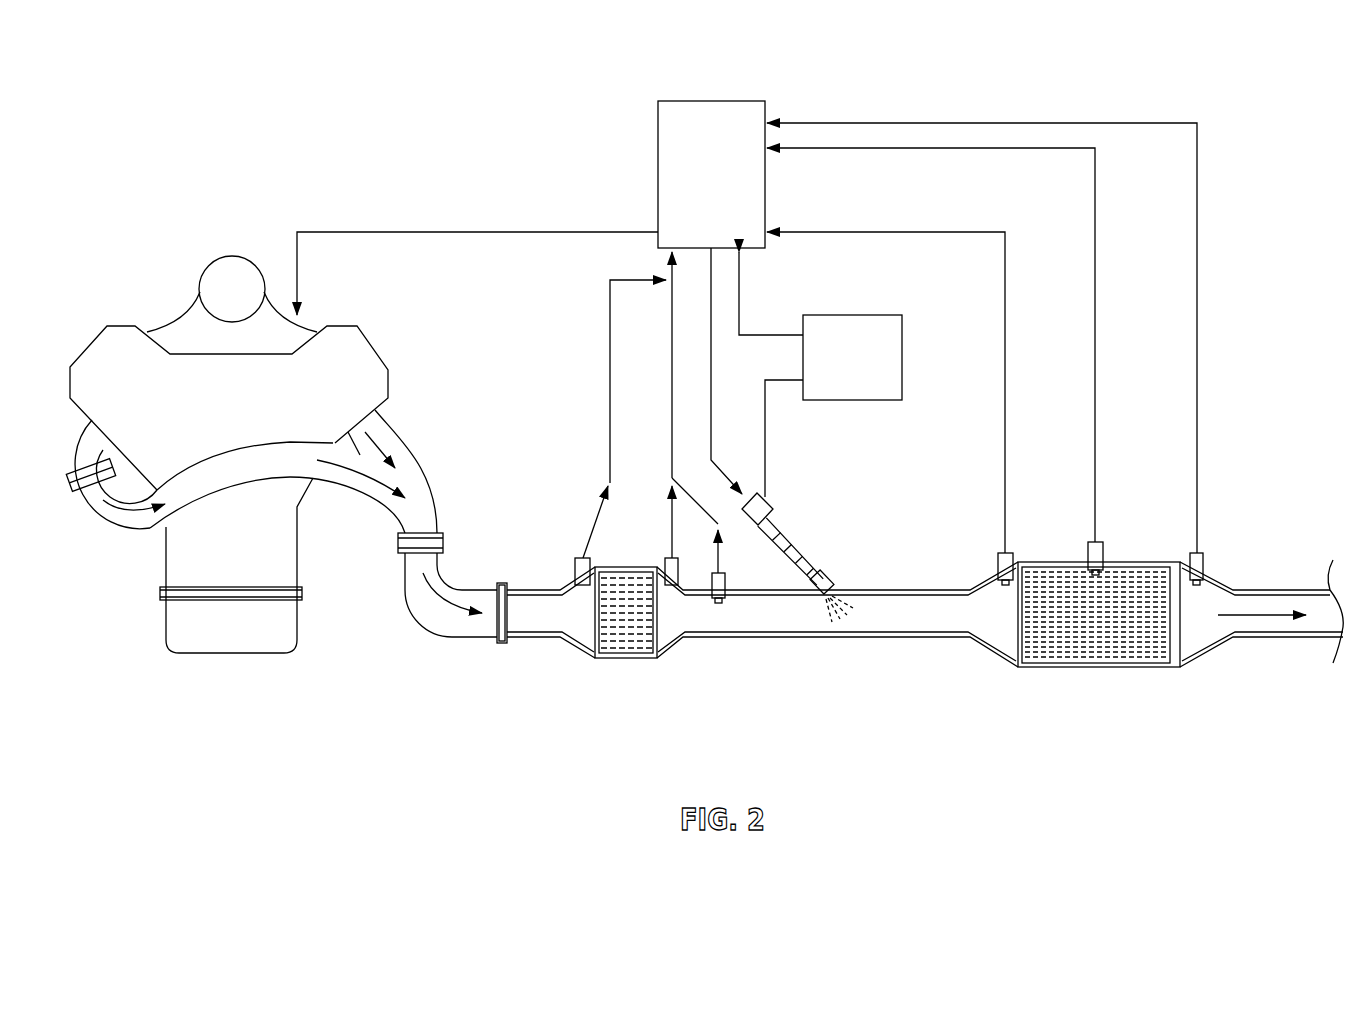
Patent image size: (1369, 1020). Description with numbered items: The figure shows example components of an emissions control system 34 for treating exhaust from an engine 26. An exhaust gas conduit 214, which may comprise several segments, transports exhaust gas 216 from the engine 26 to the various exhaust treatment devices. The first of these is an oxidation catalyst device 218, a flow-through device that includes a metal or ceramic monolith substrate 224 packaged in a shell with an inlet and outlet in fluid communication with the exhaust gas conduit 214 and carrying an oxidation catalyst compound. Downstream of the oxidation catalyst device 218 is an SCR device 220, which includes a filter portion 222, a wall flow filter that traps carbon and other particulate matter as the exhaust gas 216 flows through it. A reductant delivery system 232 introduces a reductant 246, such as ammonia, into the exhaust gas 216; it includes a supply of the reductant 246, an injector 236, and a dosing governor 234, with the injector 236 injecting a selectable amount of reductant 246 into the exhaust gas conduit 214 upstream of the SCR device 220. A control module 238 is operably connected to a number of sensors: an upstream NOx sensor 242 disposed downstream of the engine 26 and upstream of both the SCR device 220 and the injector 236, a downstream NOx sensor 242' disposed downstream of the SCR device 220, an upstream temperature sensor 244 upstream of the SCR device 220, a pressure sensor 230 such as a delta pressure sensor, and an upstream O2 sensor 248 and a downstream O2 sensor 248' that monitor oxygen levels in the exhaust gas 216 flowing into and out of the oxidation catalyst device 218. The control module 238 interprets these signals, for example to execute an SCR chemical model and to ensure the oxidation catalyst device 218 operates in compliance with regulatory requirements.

The engine 26 is at (172, 285).
The exhaust gas conduit 214 is at (403, 452).
The exhaust gas 216 is at (440, 606).
The emissions control system 34 is at (752, 714).
The oxidation catalyst device 218 is at (628, 668).
The substrate 224 is at (618, 612).
The SCR device 220 is at (1118, 676).
The filter portion 222 is at (1070, 633).
The upstream O2 sensor 248 is at (577, 432).
The downstream O2 sensor 248' is at (704, 481).
The upstream NOx sensor 242 is at (747, 586).
The upstream temperature sensor 244 is at (998, 566).
The pressure sensor 230 is at (1103, 560).
The downstream NOx sensor 242' is at (1032, 354).
The control module 238 is at (658, 177).
The reductant delivery system 232 is at (1031, 113).
The dosing governor 234 is at (902, 358).
The injector 236 is at (835, 565).
The reductant 246 is at (875, 373).